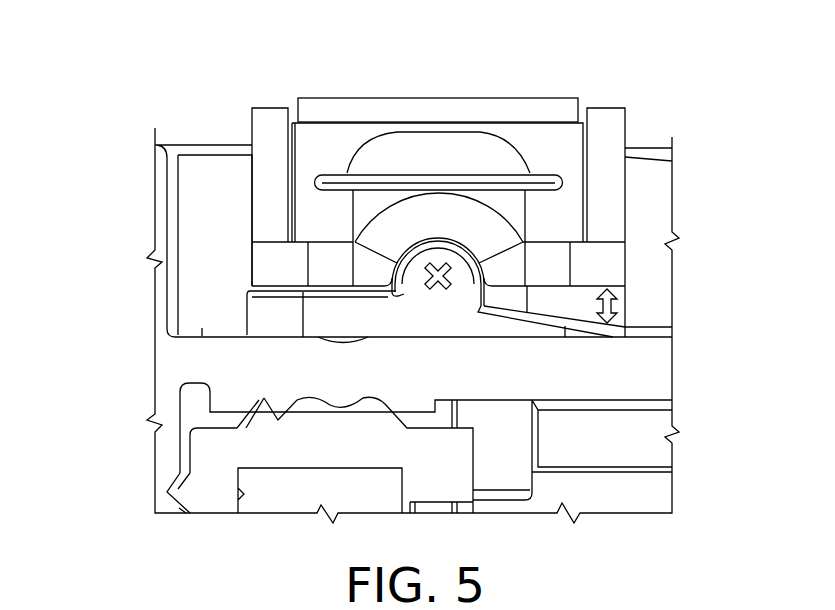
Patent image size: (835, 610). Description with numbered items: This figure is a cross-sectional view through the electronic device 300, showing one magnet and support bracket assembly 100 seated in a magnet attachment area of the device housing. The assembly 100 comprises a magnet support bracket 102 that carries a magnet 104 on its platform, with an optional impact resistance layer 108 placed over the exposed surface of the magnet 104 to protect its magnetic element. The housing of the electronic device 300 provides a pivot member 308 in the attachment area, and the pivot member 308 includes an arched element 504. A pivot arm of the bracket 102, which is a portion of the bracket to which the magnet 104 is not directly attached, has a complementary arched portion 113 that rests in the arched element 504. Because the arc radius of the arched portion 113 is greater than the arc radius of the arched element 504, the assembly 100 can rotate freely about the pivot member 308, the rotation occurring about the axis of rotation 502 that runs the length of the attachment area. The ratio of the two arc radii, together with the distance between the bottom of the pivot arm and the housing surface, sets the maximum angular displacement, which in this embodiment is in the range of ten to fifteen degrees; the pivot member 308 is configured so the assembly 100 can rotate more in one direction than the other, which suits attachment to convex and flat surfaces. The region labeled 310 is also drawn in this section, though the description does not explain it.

The magnet and support bracket assembly 100 is at (268, 96).
The impact resistance layer 108 is at (335, 98).
The arched portion of pivot arm 113 is at (403, 218).
The axis of rotation 502 is at (435, 261).
The arched element 504 is at (517, 157).
The housing cavity 310 is at (560, 147).
The magnet 104 is at (582, 102).
The magnet support bracket 102 is at (550, 262).
The pivot member 308 is at (278, 320).
The electronic device 300 is at (107, 500).